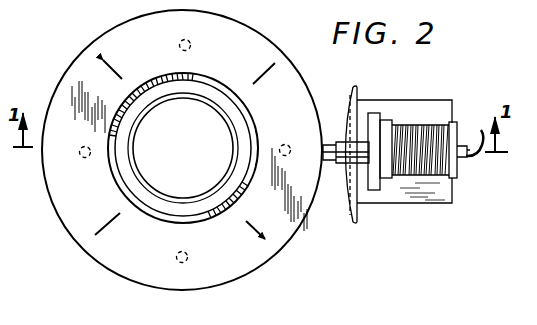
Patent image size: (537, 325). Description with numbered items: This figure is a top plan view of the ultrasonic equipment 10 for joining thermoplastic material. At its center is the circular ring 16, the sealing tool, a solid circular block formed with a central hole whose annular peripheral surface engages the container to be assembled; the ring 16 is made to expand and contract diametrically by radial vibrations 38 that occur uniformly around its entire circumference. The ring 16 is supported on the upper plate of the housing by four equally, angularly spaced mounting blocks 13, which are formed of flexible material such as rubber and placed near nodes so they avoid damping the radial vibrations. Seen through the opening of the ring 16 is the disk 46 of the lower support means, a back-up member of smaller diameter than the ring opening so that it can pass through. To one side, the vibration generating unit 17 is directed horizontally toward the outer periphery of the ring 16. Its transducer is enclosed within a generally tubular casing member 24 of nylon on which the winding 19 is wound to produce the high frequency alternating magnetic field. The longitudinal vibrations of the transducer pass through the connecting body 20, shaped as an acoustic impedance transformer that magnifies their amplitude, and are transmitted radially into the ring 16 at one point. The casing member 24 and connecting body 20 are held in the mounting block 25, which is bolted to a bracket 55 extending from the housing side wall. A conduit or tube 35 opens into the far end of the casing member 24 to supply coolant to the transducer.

The structure for the joining of thermoplastic material 10 is at (70, 242).
The mounting blocks 13 is at (186, 263).
The circular ring 16 is at (262, 46).
The vibration generating unit 17 is at (402, 144).
The winding 19 is at (418, 176).
The connecting body 20 is at (353, 148).
The tubular casing member 24 is at (454, 177).
The mounting block 25 is at (374, 112).
The conduit or tube 35 is at (476, 138).
The radial vibrations 38 is at (110, 74).
The disk 46 is at (152, 160).
The bracket 55 is at (448, 204).